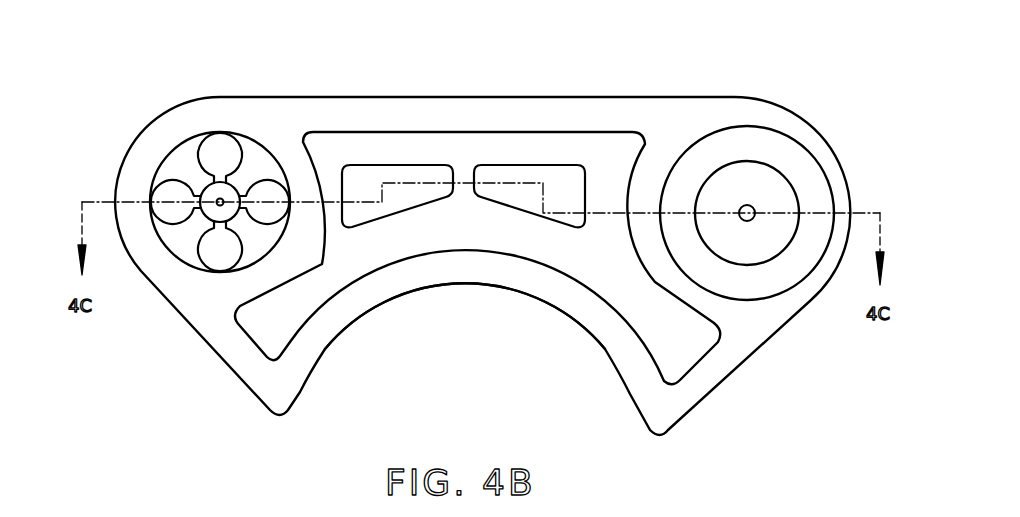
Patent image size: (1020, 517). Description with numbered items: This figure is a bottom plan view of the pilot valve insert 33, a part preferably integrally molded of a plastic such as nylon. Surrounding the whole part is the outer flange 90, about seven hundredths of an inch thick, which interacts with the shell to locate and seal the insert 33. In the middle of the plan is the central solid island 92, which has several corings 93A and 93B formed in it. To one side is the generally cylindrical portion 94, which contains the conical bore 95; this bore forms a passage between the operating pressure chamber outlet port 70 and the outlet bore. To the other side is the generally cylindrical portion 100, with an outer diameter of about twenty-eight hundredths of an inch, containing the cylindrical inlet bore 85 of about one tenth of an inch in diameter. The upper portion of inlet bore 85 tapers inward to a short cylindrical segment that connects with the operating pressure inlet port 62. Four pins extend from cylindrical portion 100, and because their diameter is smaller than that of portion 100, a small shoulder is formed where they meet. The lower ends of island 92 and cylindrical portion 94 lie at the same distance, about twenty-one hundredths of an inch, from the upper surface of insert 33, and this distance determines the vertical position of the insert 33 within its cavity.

The insert 33 is at (500, 272).
The operating pressure inlet port 62 is at (222, 200).
The operating pressure chamber outlet port 70 is at (749, 221).
The cylindrical inlet bore 85 is at (203, 183).
The outer flange 90 is at (316, 353).
The central solid island 92 is at (465, 140).
The coring 93A is at (367, 175).
The coring 93B is at (562, 175).
The generally cylindrical portion 94 is at (778, 148).
The conical bore 95 is at (772, 197).
The generally cylindrical portion 100 is at (187, 245).